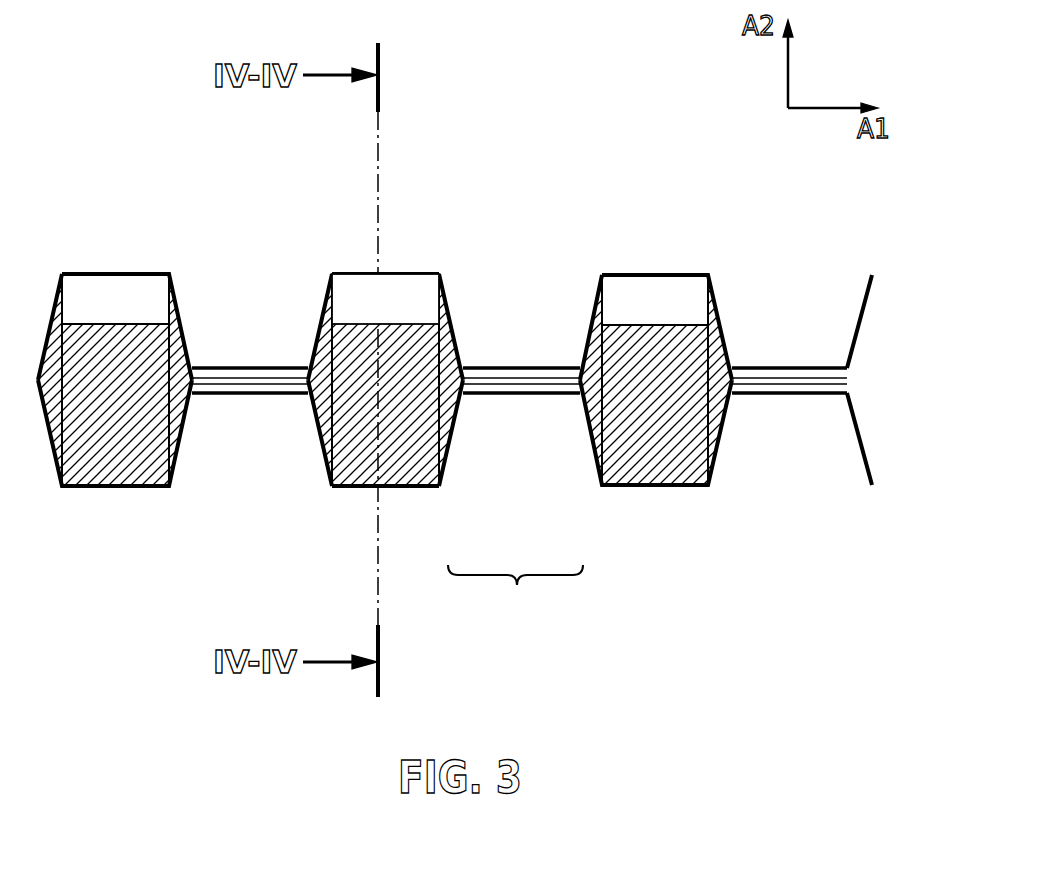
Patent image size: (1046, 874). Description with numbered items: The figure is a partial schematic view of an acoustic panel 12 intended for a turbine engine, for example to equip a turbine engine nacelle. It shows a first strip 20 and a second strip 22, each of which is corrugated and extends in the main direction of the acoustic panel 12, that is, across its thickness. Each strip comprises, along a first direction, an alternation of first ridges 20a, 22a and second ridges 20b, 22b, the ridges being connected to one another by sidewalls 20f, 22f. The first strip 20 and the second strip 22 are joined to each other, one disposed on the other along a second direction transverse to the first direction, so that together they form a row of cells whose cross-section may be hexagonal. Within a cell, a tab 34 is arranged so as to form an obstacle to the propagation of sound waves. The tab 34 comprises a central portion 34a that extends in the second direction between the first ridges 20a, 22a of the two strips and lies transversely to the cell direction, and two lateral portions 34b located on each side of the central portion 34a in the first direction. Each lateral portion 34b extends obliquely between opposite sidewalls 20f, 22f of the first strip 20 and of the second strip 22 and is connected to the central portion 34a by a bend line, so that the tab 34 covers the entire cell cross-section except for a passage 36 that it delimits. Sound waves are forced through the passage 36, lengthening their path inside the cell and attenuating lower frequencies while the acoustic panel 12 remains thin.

The acoustic panel 12 is at (815, 647).
The first strip 20 is at (372, 560).
The first ridge of the first strip 20a is at (352, 487).
The second ridge of the first strip 20b is at (253, 395).
The sidewall of the first strip 20f is at (319, 440).
The second strip 22 is at (373, 187).
The first ridge of the second strip 22a is at (360, 273).
The second ridge of the second strip 22b is at (223, 366).
The sidewall of the second strip 22f is at (319, 325).
The tab 34 is at (515, 589).
The central portion of the tab 34a is at (357, 457).
The lateral portion of the tab 34b is at (322, 382).
The passage 36 is at (427, 270).